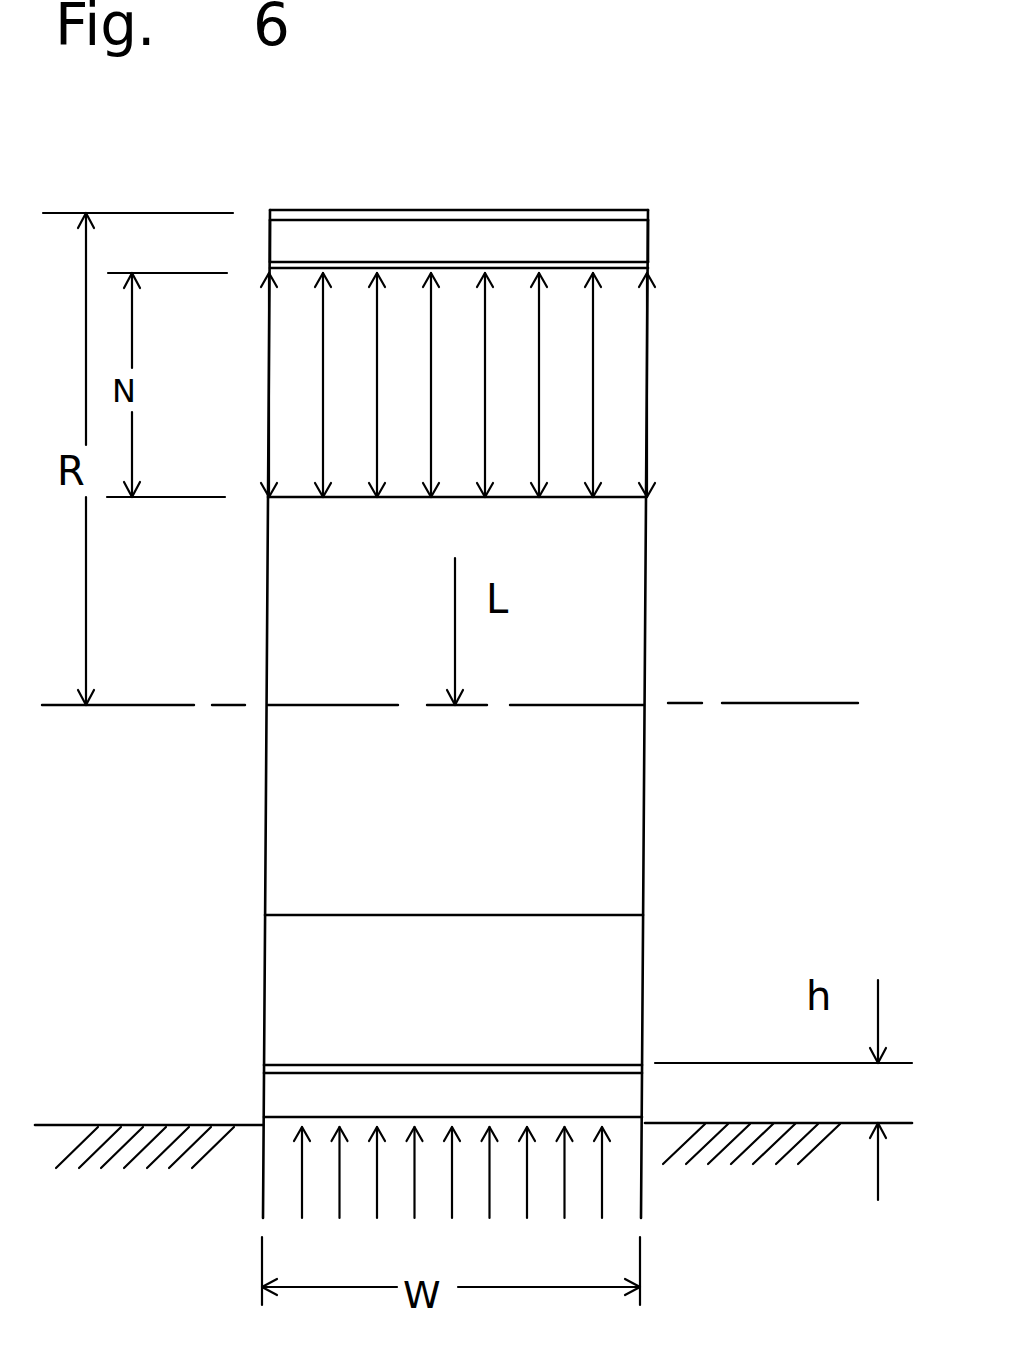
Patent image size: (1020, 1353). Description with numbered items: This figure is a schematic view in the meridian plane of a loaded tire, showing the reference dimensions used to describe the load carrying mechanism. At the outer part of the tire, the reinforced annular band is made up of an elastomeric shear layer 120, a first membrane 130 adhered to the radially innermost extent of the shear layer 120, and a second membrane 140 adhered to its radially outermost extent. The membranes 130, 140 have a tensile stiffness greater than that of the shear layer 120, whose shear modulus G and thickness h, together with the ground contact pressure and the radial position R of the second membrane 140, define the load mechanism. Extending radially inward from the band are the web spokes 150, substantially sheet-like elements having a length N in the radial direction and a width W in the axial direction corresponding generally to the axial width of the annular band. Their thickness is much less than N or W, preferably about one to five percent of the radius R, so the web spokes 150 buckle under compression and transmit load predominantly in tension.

The elastomeric shear layer 120 is at (547, 240).
The first membrane 130 is at (603, 268).
The second membrane 140 is at (592, 213).
The web spokes 150 is at (648, 416).